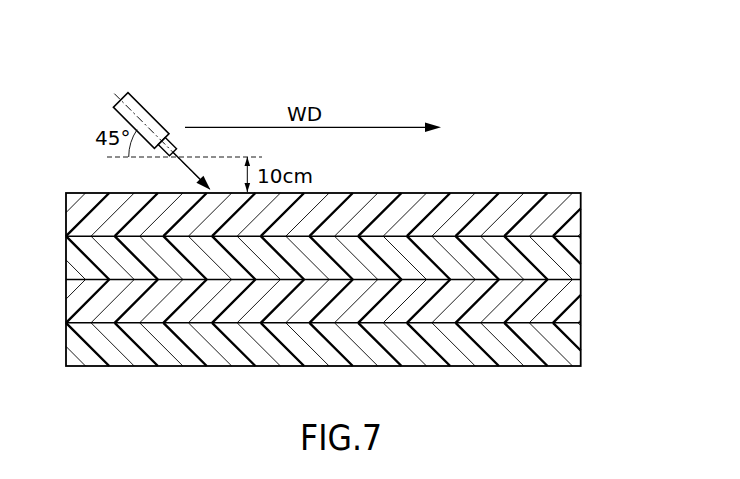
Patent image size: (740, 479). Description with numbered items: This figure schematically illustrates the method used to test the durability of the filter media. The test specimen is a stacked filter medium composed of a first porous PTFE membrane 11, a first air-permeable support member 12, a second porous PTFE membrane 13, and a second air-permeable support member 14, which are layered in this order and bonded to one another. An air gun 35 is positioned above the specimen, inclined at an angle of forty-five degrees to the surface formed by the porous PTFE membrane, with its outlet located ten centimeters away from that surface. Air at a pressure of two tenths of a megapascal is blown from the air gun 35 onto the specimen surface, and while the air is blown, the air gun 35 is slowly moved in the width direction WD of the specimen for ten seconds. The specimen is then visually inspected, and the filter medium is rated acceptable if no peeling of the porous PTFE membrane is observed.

The first porous PTFE membrane 11 is at (572, 221).
The first air-permeable support member 12 is at (572, 262).
The second porous PTFE membrane 13 is at (572, 303).
The second air-permeable support member 14 is at (572, 348).
The air gun 35 is at (141, 104).